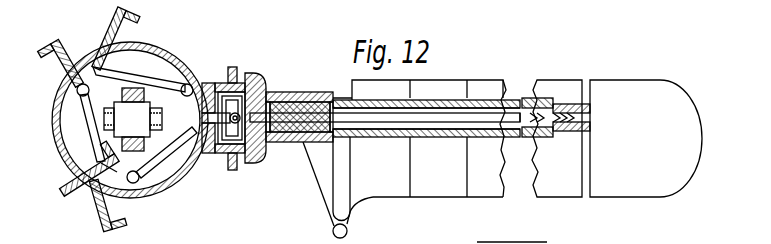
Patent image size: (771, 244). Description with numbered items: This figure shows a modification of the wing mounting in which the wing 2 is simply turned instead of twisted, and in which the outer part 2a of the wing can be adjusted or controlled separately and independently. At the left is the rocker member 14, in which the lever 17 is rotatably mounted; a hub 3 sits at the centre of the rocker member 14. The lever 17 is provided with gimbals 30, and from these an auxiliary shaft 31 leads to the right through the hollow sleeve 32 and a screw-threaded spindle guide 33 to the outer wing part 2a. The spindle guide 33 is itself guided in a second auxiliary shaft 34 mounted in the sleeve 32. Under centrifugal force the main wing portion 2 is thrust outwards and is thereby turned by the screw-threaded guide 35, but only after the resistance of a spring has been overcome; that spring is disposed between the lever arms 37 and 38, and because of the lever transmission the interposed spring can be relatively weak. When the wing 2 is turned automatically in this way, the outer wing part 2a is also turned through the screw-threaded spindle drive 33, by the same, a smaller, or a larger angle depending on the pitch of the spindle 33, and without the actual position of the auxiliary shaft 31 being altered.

The wing 2 is at (495, 187).
The outer part of the wing 2a is at (637, 183).
The hub 3 is at (127, 115).
The rocker member 14 is at (160, 197).
The lever 17 is at (172, 150).
The gimbals 30 is at (252, 108).
The auxiliary shaft 31 is at (417, 118).
The hollow sleeve 32 is at (457, 137).
The screw-threaded spindle guide 33 is at (580, 108).
The second auxiliary shaft 34 is at (563, 130).
The screw-threaded guide 35 is at (302, 140).
The lever arm 37 is at (330, 203).
The lever arm 38 is at (347, 230).